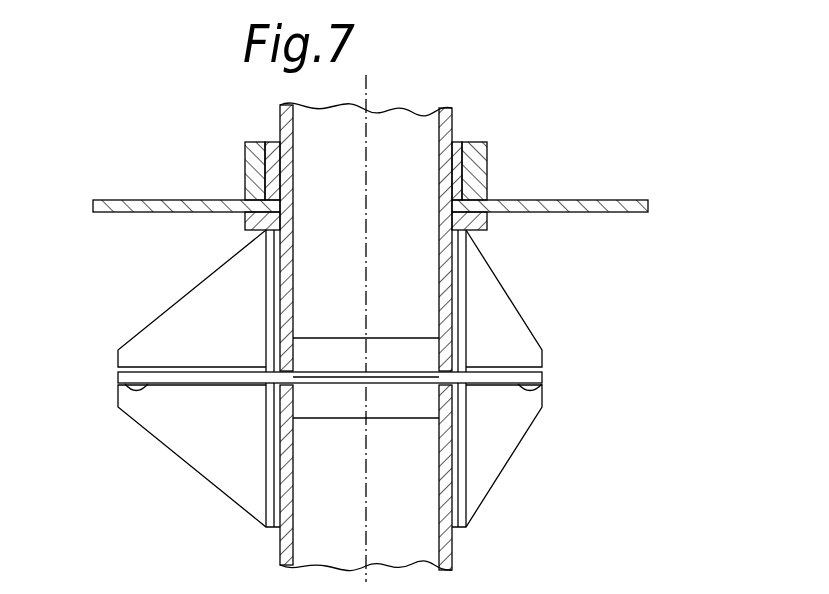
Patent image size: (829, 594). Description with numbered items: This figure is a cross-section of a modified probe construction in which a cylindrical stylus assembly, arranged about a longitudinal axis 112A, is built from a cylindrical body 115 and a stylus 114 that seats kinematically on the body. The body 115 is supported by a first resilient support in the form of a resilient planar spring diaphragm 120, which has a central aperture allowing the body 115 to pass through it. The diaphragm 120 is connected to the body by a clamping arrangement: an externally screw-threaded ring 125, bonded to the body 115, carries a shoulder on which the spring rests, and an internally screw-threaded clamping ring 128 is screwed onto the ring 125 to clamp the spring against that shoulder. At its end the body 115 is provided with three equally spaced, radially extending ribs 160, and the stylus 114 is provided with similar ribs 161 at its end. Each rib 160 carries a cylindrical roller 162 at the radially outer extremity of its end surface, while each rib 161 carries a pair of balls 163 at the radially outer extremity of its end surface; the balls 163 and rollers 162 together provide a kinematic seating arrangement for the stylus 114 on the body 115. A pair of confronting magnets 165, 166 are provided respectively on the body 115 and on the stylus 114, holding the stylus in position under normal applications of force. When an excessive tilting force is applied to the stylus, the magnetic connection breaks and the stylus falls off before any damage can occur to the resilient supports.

The longitudinal axis 112A is at (372, 105).
The stylus 114 is at (452, 553).
The cylindrical body 115 is at (455, 118).
The planar spring diaphragm 120 is at (592, 200).
The externally screw-threaded ring 125 is at (460, 145).
The clamping ring 128 is at (245, 152).
The ribs 160 is at (203, 283).
The ribs 161 is at (180, 452).
The cylindrical roller 162 is at (122, 372).
The balls 163 is at (130, 390).
The magnet 165 is at (404, 347).
The magnet 166 is at (402, 402).